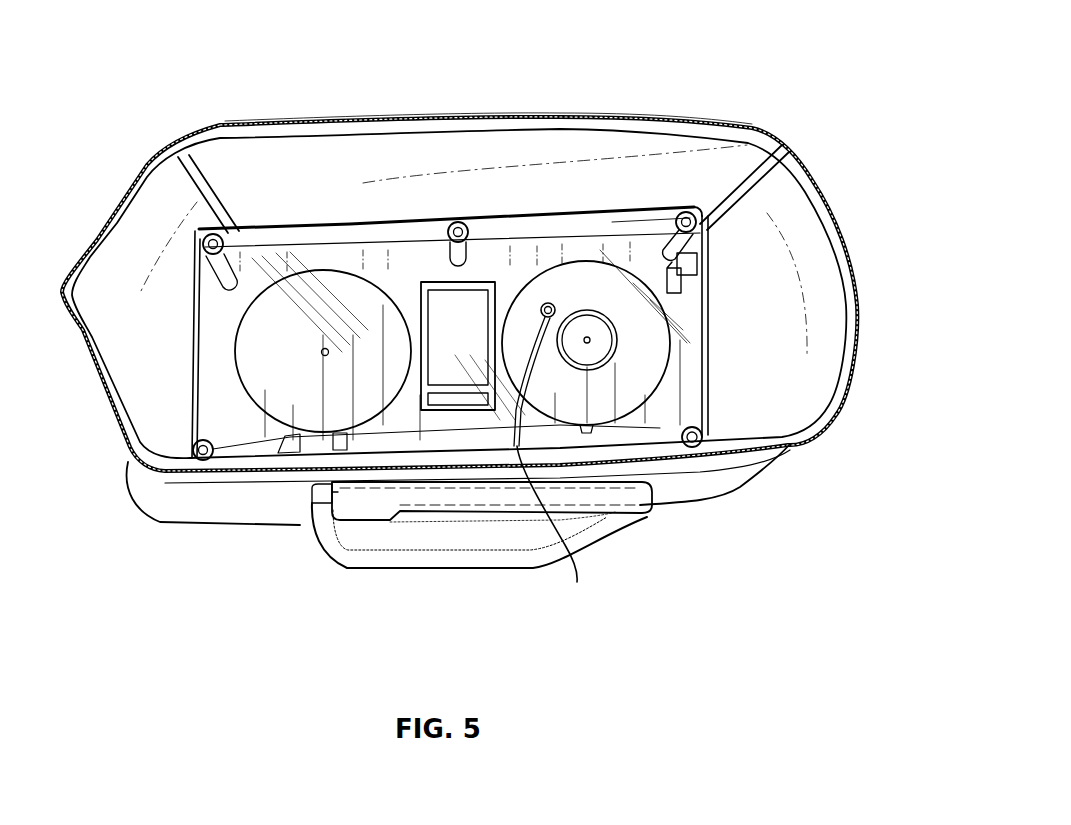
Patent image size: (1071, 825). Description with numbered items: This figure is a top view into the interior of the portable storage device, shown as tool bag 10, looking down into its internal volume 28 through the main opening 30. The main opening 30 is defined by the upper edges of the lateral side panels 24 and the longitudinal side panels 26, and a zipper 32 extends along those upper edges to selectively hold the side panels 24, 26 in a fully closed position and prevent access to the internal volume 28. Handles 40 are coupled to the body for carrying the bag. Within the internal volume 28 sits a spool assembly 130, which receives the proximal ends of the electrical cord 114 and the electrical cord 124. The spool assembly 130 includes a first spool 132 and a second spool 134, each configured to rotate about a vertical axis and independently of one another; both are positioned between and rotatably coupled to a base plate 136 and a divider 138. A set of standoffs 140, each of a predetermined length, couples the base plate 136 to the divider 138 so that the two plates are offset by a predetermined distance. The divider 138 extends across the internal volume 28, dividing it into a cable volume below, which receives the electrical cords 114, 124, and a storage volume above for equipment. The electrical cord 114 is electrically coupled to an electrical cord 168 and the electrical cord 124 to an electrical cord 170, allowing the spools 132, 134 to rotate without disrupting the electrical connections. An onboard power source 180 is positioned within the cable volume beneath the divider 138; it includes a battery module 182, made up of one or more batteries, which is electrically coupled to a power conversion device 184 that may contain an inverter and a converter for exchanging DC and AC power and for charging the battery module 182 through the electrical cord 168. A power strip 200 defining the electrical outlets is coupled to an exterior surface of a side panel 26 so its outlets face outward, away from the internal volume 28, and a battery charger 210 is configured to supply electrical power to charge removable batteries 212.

The tool bag 10 is at (768, 42).
The side panels 24 is at (172, 224).
The side panels 26 is at (400, 158).
The internal volume 28 is at (190, 362).
The main opening 30 is at (749, 128).
The zipper 32 is at (596, 115).
The handles 40 is at (514, 573).
The electrical cord 114 is at (653, 422).
The electrical cord 124 is at (362, 438).
The spool assembly 130 is at (334, 222).
The spool 132 is at (608, 300).
The spool 134 is at (299, 372).
The base plate 136 is at (403, 270).
The divider 138 is at (192, 326).
The standoffs 140 is at (433, 227).
The electrical cord 168 is at (556, 525).
The electrical cord 170 is at (287, 450).
The onboard power source 180 is at (485, 283).
The battery module 182 is at (482, 353).
The power conversion device 184 is at (480, 408).
The power strip 200 is at (638, 520).
The battery charger 210 is at (610, 210).
The removable batteries 212 is at (662, 273).